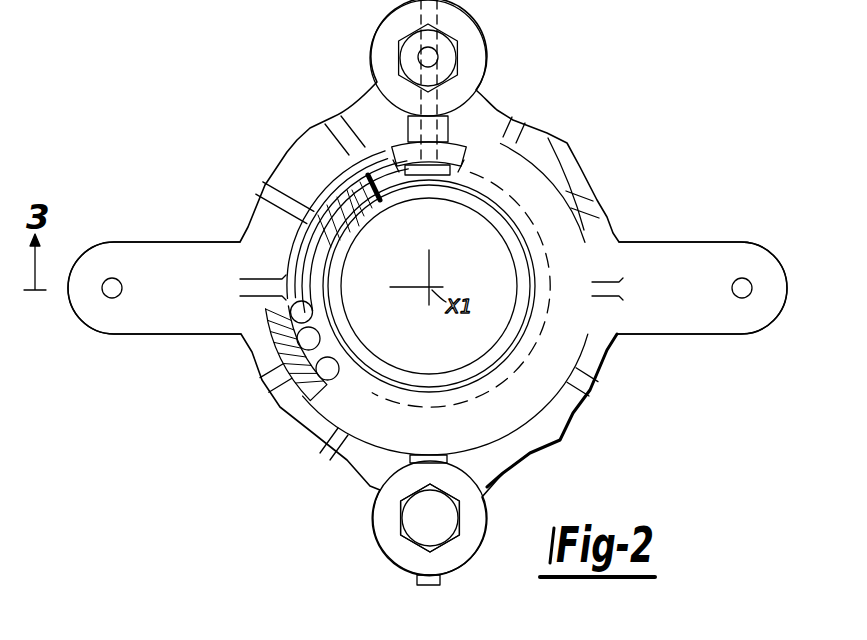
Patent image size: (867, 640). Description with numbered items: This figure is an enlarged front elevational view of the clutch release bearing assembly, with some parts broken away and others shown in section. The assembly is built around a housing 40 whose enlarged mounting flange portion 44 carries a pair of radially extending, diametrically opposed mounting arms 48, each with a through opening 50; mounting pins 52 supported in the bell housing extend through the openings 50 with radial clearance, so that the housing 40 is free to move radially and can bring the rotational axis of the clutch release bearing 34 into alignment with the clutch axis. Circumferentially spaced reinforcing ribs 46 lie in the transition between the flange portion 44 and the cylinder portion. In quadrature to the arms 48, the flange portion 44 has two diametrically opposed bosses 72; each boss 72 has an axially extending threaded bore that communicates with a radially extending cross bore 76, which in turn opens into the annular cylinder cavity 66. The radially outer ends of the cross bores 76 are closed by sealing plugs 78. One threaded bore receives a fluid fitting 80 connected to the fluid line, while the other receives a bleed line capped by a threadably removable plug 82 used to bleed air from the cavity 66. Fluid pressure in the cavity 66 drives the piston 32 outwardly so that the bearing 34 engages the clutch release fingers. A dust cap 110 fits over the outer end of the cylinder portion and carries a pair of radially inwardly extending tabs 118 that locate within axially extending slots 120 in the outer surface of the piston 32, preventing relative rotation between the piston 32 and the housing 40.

The piston 32 is at (327, 295).
The clutch release bearing 34 is at (571, 232).
The housing 40 is at (571, 409).
The mounting flange portion 44 is at (309, 128).
The reinforcing ribs 46 is at (515, 141).
The mounting arms 48 is at (180, 213).
The through opening 50 is at (121, 294).
The mounting pins 52 is at (460, 392).
The annular cylinder cavity 66 is at (406, 152).
The bosses 72 is at (474, 46).
The cross bore 76 is at (448, 122).
The sealing plugs 78 is at (434, 585).
The fluid fitting 80 is at (400, 43).
The plug 82 is at (454, 518).
The dust cap 110 is at (287, 250).
The tabs 118 is at (388, 178).
The slots 120 is at (364, 186).